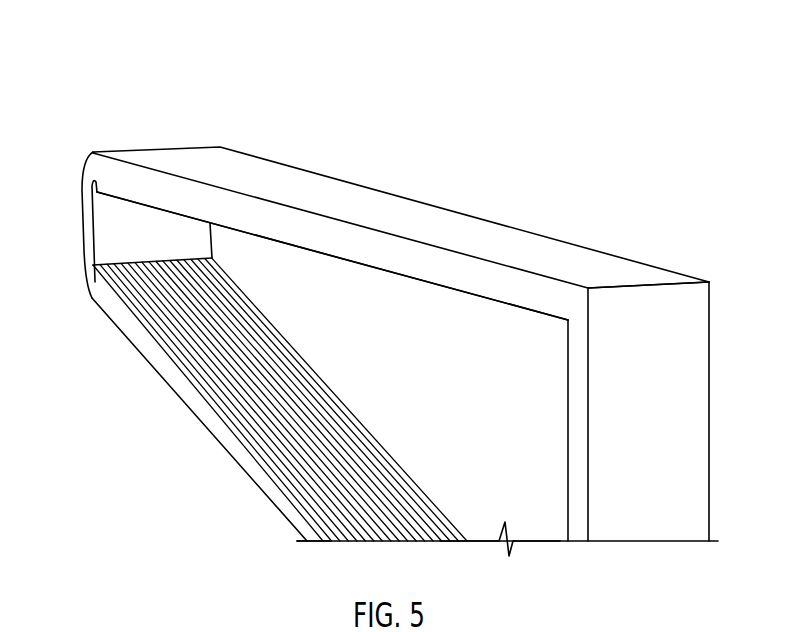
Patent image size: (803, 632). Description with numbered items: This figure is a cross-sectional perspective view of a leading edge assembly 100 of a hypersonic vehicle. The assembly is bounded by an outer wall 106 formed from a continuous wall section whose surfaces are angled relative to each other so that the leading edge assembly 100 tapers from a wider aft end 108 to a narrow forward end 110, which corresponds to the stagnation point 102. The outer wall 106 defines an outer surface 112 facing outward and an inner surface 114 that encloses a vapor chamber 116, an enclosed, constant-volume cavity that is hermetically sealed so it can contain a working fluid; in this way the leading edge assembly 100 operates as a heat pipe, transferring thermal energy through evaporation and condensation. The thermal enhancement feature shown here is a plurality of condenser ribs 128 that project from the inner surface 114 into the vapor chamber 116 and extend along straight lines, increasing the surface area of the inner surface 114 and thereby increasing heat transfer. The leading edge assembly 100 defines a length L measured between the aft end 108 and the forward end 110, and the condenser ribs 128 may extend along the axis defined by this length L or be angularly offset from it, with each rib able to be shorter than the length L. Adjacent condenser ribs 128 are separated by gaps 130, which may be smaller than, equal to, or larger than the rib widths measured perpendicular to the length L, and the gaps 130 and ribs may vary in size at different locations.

The leading edge assembly 100 is at (92, 112).
The stagnation point 102 is at (83, 212).
The outer wall 106 is at (182, 397).
The aft end 108 is at (683, 403).
The forward end 110 is at (80, 187).
The outer surface 112 is at (282, 514).
The inner surface 114 is at (446, 512).
The vapor chamber 116 is at (473, 413).
The condenser ribs 128 is at (163, 338).
The gaps 130 is at (303, 367).
The length L is at (234, 120).